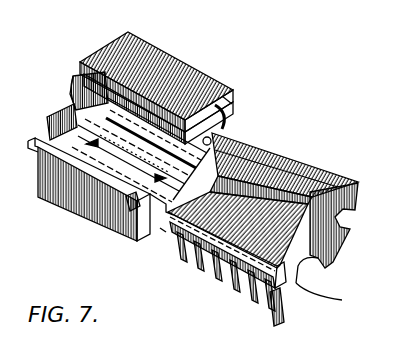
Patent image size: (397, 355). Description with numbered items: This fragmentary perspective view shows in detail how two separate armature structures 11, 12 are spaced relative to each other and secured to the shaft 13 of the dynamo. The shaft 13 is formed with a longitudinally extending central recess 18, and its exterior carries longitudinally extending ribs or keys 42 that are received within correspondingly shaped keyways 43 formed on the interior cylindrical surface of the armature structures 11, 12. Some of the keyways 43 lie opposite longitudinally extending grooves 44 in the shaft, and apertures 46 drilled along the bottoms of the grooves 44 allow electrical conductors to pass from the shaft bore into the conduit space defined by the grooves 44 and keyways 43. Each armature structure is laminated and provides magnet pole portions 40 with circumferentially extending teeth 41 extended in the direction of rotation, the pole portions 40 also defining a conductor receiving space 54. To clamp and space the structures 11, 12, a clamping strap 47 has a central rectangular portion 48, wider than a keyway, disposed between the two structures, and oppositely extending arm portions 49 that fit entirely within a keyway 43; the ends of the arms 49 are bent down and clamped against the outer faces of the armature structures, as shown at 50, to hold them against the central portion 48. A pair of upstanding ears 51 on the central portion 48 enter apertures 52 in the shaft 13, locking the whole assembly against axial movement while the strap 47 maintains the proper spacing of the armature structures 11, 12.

The armature structure 11 is at (201, 68).
The armature structure 12 is at (309, 150).
The shaft 13 is at (58, 122).
The central recess 18 is at (133, 117).
The magnet pole portion 40 is at (354, 178).
The teeth 41 is at (229, 109).
The ribs 42 is at (262, 142).
The keyways 43 is at (72, 96).
The grooves 44 is at (222, 126).
The apertures 46 is at (227, 99).
The clamping strap 47 is at (107, 174).
The central rectangular portion 48 is at (162, 232).
The arm portions 49 is at (79, 178).
The bent-down clamped ends of the arms 50 is at (31, 143).
The upstanding ears 51 is at (117, 199).
The apertures 52 is at (157, 177).
The conductor receiving space 54 is at (308, 286).